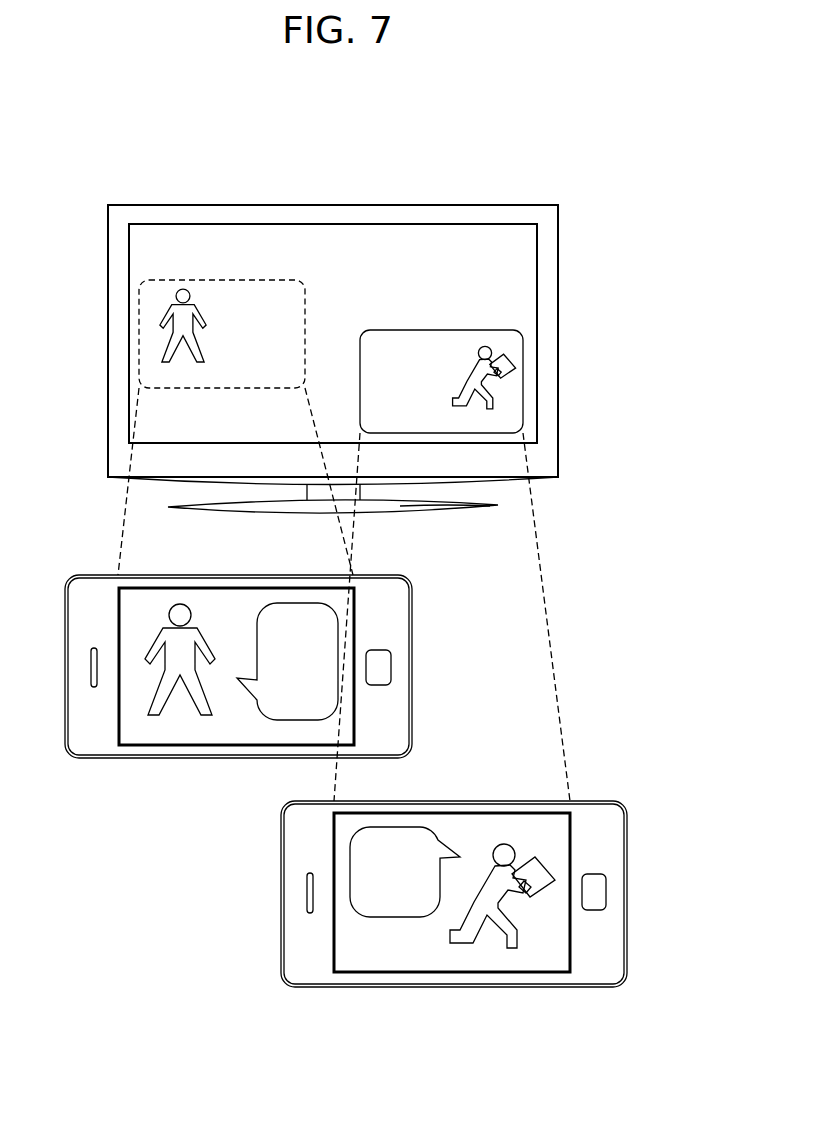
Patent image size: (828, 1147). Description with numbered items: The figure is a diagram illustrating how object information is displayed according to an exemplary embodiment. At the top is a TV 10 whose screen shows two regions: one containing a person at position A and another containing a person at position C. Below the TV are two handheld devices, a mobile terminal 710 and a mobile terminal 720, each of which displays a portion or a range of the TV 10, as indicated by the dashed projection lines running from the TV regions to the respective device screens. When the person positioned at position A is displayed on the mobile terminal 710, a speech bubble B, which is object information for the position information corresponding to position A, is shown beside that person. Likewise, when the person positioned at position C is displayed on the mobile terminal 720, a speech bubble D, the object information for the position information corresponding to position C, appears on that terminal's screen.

The TV 10 is at (558, 274).
The mobile terminal 710 is at (412, 706).
The mobile terminal 720 is at (627, 922).